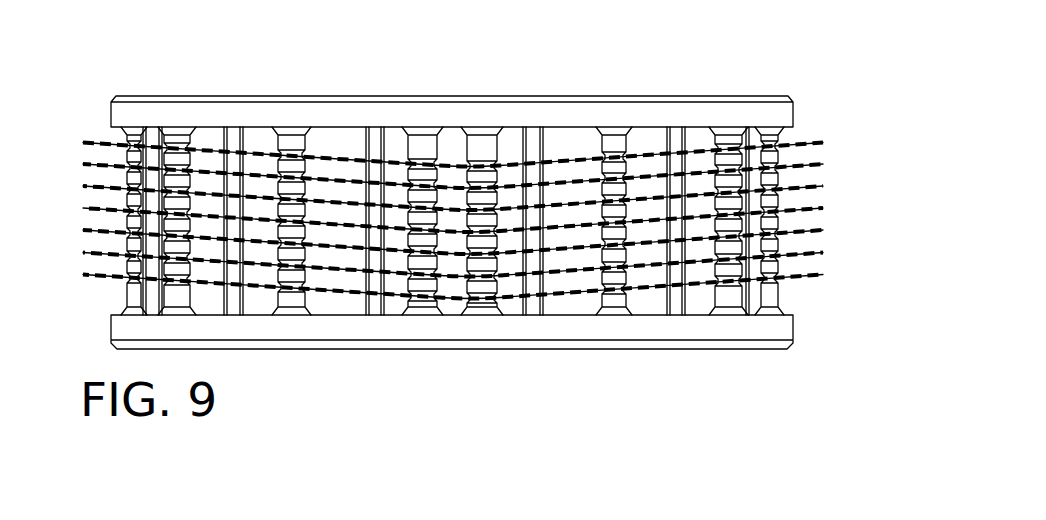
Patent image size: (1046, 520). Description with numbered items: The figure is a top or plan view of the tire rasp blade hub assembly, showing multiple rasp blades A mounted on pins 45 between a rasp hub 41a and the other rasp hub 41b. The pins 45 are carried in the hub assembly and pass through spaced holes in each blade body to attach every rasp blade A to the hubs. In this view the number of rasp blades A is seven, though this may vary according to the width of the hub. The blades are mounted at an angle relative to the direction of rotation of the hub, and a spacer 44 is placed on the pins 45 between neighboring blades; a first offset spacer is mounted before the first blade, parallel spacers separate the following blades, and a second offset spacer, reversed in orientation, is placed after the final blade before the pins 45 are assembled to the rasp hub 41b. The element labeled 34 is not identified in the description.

The rasp hub 41b is at (648, 115).
The rasp hub 41a is at (710, 330).
The spacer 44 is at (480, 148).
The pins 45 is at (372, 135).
The wire electrode 34 is at (638, 300).
The rasp blade A is at (252, 152).